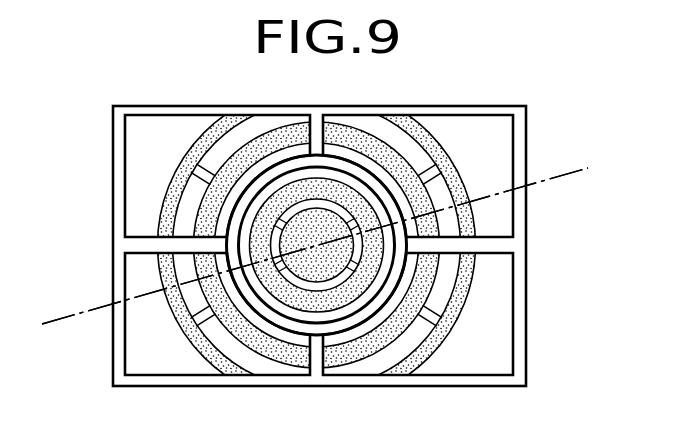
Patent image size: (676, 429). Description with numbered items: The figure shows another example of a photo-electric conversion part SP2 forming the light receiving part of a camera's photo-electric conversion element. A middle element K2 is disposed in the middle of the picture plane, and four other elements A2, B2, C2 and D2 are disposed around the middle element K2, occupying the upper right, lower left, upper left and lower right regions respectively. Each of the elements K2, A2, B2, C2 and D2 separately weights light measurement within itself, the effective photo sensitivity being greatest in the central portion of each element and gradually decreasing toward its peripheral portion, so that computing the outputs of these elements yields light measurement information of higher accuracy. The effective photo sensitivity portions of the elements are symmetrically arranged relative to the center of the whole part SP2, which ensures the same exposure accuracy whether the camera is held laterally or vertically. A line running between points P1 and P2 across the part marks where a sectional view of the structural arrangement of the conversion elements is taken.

The photo-electric conversion part SP2 is at (68, 192).
The element C2 is at (217, 176).
The element A2 is at (418, 176).
The element B2 is at (217, 314).
The element D2 is at (418, 314).
The middle element K2 is at (317, 245).
The section line end point P1 is at (57, 324).
The section line end point P2 is at (580, 173).